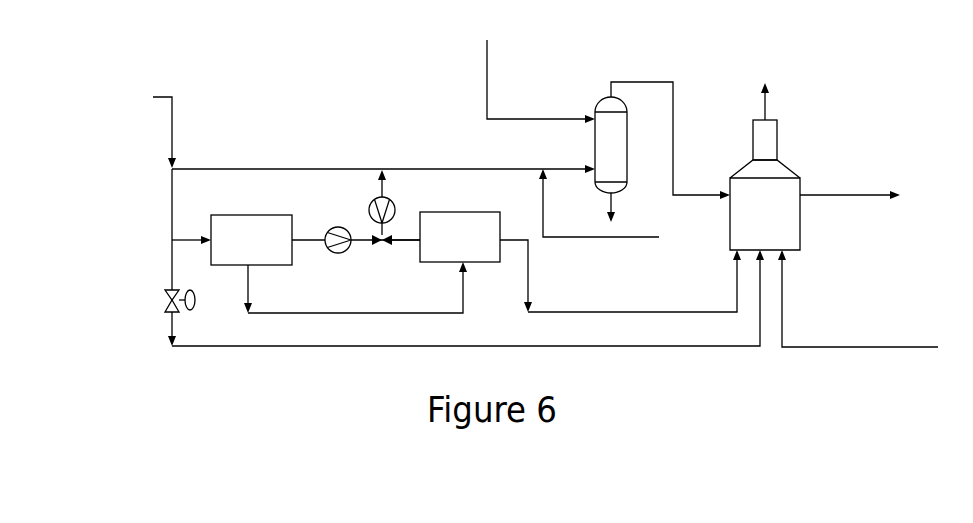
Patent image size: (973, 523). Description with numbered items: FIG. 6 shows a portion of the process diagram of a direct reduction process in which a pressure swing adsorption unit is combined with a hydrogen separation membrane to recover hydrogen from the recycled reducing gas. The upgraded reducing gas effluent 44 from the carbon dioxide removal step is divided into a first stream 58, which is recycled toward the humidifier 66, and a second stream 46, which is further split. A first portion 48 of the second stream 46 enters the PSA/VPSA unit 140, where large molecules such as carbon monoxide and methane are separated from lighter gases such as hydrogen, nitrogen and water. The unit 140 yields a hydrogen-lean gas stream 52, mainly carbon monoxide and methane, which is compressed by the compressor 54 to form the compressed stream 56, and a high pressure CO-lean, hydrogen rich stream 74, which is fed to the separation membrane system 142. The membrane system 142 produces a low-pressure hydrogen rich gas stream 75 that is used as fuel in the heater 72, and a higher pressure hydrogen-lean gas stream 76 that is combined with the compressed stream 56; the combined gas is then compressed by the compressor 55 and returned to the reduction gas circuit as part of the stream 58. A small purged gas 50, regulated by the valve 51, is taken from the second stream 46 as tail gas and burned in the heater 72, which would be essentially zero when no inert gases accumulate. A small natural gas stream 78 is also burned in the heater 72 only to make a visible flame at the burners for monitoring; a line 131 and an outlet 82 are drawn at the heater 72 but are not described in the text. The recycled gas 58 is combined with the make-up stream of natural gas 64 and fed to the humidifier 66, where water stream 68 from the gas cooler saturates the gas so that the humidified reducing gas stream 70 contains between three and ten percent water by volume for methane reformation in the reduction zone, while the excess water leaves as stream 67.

The upgraded reducing gas effluent 44 is at (174, 133).
The first stream 58 is at (318, 168).
The second stream 46 is at (171, 230).
The first portion 48 is at (178, 242).
The PSA/VPSA unit 140 is at (252, 222).
The hydrogen-lean gas stream 52 is at (320, 236).
The compressor 54 is at (340, 254).
The compressed stream 56 is at (380, 190).
The compressor 55 is at (395, 211).
The separation membrane system 142 is at (456, 218).
The higher pressure hydrogen-lean gas stream 76 is at (398, 240).
The hydrogen rich stream 74 is at (330, 312).
The low-pressure hydrogen rich gas stream 75 is at (684, 312).
The valve 51 is at (164, 297).
The purged gas 50 is at (168, 328).
The water stream 68 is at (575, 118).
The humidifier 66 is at (618, 134).
The humidified reducing gas stream 70 is at (675, 104).
The excess water stream 67 is at (605, 198).
The make-up stream of natural gas 64 is at (648, 240).
The heater 72 is at (735, 224).
The vent line 131 is at (760, 108).
The product outlet line 82 is at (843, 195).
The natural gas stream 78 is at (878, 347).